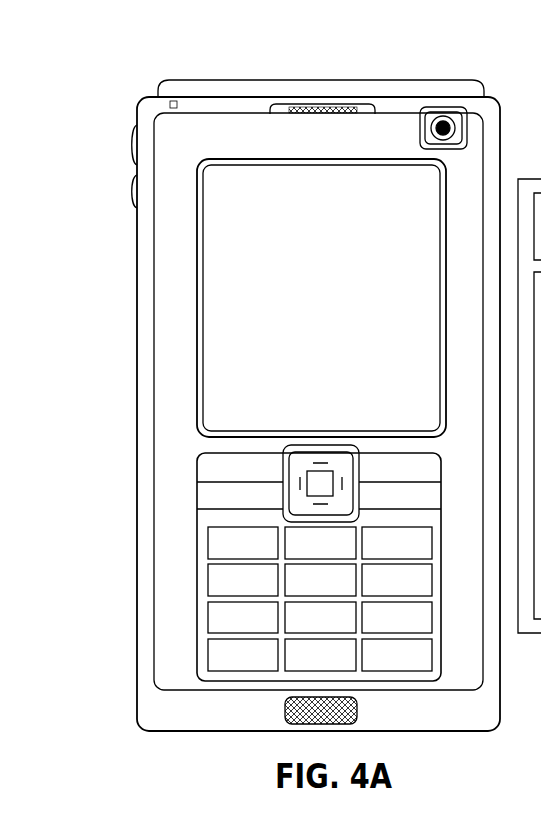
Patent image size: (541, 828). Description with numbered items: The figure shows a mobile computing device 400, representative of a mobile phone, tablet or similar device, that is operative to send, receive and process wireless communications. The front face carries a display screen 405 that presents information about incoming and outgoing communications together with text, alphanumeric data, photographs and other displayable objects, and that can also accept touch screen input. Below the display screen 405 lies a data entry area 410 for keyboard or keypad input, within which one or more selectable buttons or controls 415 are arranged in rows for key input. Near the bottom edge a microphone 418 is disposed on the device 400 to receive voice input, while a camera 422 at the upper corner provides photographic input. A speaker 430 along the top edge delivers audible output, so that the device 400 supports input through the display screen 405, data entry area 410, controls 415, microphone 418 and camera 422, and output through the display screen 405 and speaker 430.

The mobile computing device 400 is at (127, 100).
The display screen 405 is at (230, 283).
The data entry area 410 is at (198, 491).
The selectable buttons or controls 415 is at (219, 580).
The microphone 418 is at (283, 712).
The camera 422 is at (445, 127).
The speaker 430 is at (327, 113).